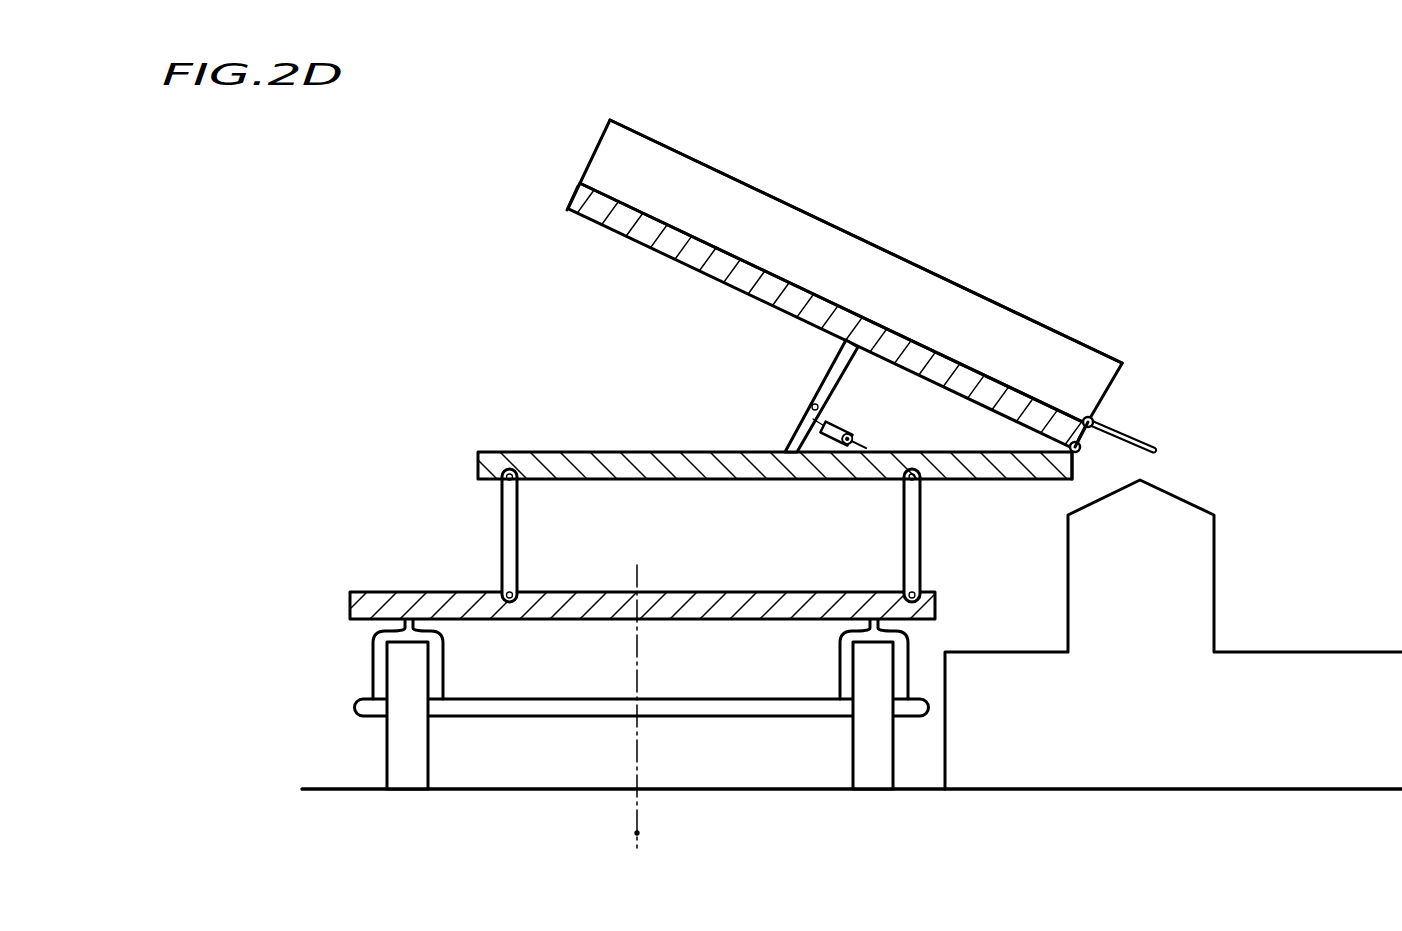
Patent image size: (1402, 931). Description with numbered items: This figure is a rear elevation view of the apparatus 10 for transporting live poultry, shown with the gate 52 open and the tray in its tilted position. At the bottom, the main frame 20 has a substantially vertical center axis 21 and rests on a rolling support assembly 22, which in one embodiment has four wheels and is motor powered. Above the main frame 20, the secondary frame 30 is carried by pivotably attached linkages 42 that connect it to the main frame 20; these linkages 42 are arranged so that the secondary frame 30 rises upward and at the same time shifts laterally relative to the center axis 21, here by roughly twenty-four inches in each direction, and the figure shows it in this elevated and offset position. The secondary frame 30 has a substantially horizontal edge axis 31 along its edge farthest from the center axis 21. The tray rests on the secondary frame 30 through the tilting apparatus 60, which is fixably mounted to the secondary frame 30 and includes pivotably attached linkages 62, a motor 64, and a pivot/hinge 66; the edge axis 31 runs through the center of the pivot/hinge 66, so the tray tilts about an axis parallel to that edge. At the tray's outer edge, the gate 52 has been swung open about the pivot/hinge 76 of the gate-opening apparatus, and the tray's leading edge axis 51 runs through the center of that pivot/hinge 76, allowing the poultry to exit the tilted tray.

The apparatus 10 is at (368, 282).
The main frame 20 is at (440, 600).
The center axis 21 is at (637, 833).
The rolling support assembly 22 is at (932, 640).
The secondary frame 30 is at (560, 452).
The edge axis 31 is at (1090, 472).
The pivotably attached linkages 42 is at (519, 552).
The leading edge axis 51 is at (1112, 452).
The gate 52 is at (1128, 429).
The tilting apparatus 60 is at (728, 360).
The pivotably attached linkages 62 is at (826, 381).
The motor 64 is at (846, 427).
The pivot/hinge 66 is at (1069, 447).
The pivot/hinge 76 is at (1083, 415).